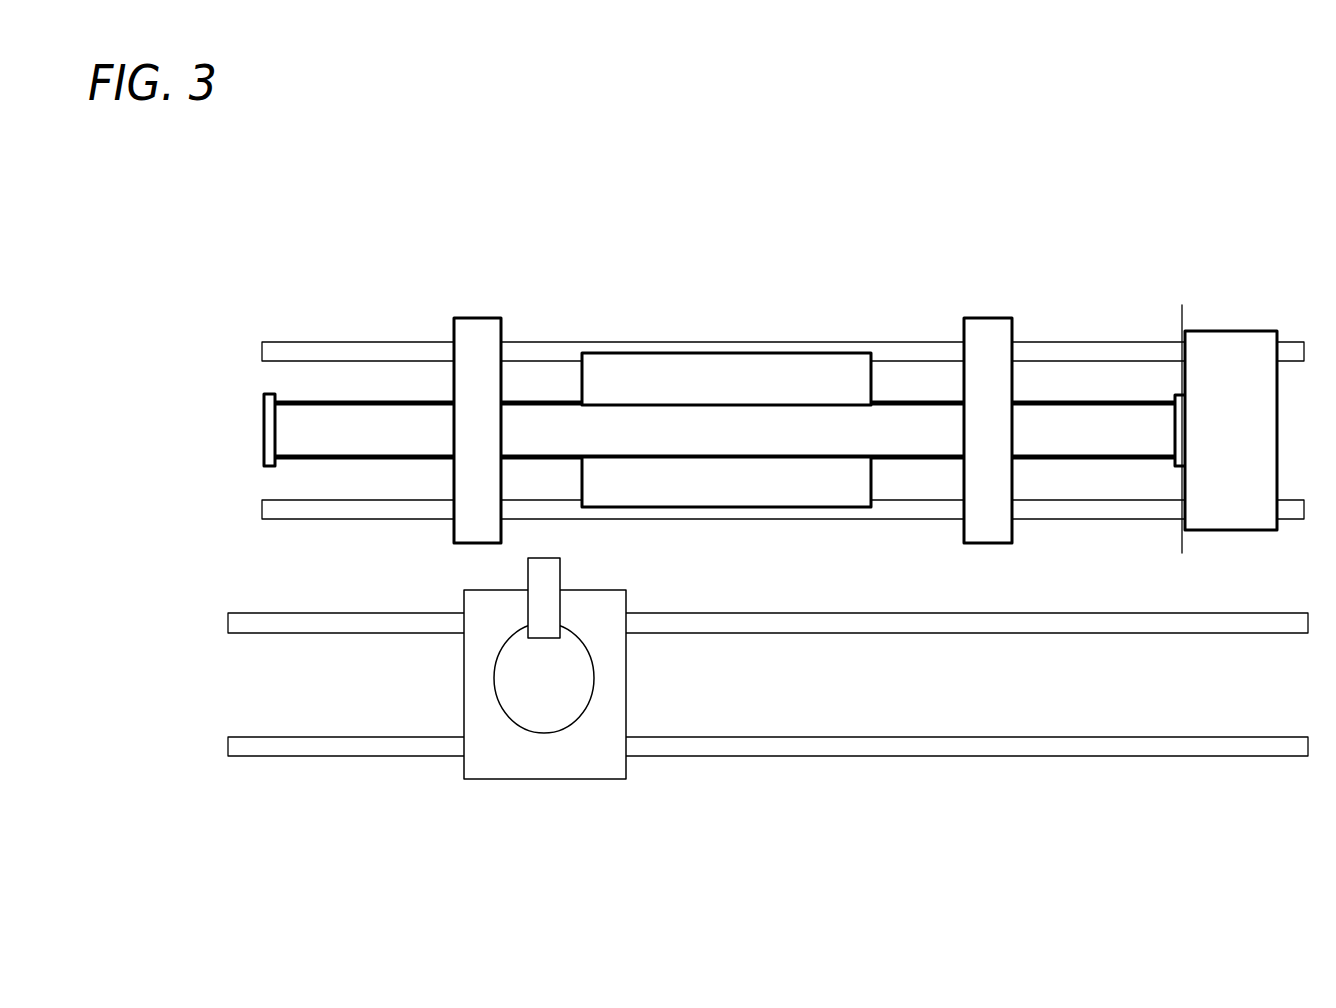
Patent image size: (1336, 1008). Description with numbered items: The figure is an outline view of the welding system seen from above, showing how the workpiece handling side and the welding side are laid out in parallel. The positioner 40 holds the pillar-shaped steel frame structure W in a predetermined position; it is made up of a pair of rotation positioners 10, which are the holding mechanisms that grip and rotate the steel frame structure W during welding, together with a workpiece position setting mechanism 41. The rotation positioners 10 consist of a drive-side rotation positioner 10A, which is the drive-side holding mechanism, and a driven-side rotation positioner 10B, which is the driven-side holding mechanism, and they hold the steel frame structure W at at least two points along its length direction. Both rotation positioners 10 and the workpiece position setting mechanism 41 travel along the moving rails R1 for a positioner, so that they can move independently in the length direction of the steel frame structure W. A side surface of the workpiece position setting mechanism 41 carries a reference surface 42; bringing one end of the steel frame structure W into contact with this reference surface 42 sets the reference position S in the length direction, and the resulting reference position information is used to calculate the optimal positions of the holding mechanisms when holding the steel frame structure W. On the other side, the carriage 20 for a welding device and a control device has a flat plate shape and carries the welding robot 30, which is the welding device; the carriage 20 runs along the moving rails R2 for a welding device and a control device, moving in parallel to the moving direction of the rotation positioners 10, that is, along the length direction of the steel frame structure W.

The positioner 40 is at (849, 355).
The rotation positioner 10 is at (724, 381).
The drive-side rotation positioner 10A is at (990, 316).
The driven-side rotation positioner 10B is at (477, 316).
The workpiece position setting mechanism 41 is at (1231, 383).
The reference surface 42 is at (1180, 377).
The reference position S is at (1178, 322).
The steel frame structure W is at (261, 427).
The moving rails for a positioner R1 is at (355, 510).
The moving rails for a welding device and a control device R2 is at (335, 626).
The carriage for a welding device and a control device 20 is at (519, 713).
The welding robot 30 is at (490, 670).